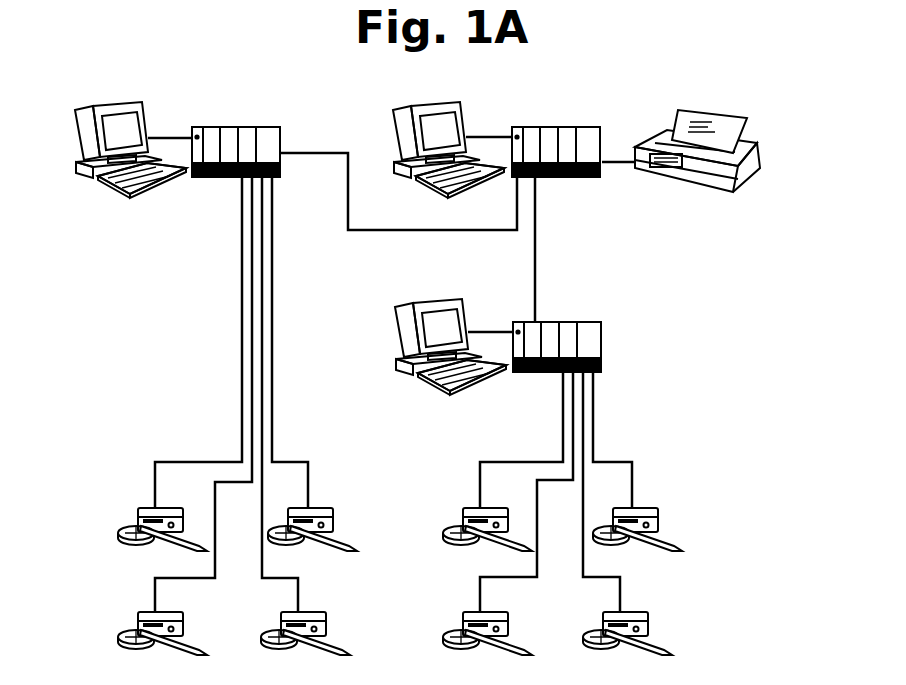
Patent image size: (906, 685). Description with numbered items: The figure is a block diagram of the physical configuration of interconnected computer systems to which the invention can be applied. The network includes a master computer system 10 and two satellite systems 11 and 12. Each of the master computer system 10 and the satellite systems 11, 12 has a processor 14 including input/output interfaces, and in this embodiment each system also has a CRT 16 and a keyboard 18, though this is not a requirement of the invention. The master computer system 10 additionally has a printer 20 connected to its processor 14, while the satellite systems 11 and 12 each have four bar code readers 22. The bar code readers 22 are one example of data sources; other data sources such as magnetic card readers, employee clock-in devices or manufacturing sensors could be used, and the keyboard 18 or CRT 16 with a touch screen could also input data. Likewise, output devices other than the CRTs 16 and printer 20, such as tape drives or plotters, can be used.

The master computer system 10 is at (596, 109).
The satellite system 11 is at (176, 219).
The satellite system 12 is at (637, 366).
The processor 14 is at (222, 177).
The CRT 16 is at (145, 123).
The keyboard 18 is at (113, 192).
The printer 20 is at (748, 180).
The bar code reader 22 is at (148, 507).